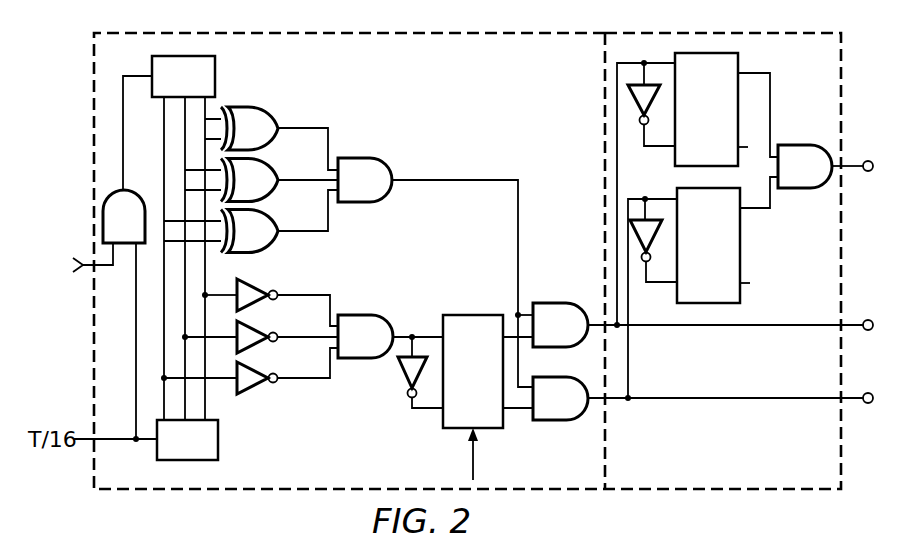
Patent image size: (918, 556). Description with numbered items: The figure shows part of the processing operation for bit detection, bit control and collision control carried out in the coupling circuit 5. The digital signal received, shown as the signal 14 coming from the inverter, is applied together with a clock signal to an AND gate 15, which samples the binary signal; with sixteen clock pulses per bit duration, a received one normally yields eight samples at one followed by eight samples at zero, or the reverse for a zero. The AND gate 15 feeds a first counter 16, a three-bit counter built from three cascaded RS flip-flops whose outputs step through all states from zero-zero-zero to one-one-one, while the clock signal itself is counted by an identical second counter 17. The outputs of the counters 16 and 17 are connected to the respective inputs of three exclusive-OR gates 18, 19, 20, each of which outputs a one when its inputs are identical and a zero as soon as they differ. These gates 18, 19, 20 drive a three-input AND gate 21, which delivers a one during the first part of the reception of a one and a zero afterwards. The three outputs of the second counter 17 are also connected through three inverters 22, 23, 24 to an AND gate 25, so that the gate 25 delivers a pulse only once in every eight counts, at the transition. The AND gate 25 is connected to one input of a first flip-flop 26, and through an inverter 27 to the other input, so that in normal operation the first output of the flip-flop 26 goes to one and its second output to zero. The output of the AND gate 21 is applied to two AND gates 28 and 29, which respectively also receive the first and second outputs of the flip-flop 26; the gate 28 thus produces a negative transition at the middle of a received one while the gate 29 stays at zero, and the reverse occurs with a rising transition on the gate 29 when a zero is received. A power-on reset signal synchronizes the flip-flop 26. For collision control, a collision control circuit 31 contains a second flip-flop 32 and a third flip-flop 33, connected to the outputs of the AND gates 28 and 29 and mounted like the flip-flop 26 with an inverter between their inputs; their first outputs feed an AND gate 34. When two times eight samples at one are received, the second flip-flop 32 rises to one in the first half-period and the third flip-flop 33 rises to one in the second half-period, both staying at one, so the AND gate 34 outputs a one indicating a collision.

The coupling circuit 5 is at (547, 76).
The signal coming from the inverter 14 is at (78, 260).
The AND gate 15 is at (131, 190).
The first counter C1 16 is at (215, 73).
The second counter C2 17 is at (218, 440).
The exclusive-OR gate 18 is at (268, 106).
The exclusive-OR gate 19 is at (268, 158).
The exclusive-OR gate 20 is at (268, 210).
The AND gate 21 is at (356, 158).
The inverter 22 is at (262, 281).
The inverter 23 is at (262, 323).
The inverter 24 is at (262, 364).
The AND gate 25 is at (358, 315).
The flip-flop RS1 26 is at (470, 315).
The inverter 27 is at (404, 375).
The AND gate 28 is at (556, 303).
The AND gate 29 is at (557, 420).
The collision control circuit 31 is at (740, 458).
The flip-flop RS2 32 is at (675, 158).
The flip-flop RS3 33 is at (740, 236).
The AND gate 34 is at (797, 145).